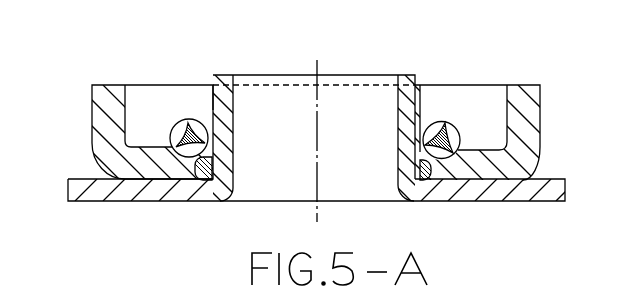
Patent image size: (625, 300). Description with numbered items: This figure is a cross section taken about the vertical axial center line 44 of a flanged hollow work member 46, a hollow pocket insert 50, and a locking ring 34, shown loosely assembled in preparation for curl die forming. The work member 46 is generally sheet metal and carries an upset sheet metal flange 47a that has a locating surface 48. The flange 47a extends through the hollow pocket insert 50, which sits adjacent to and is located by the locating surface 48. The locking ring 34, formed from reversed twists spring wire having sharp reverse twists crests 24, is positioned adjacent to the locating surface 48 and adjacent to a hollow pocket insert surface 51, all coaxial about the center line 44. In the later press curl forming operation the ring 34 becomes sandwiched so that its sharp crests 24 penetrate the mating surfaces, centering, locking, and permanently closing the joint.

The hollow pocket insert 50 is at (97, 118).
The reverse twists crests 24 is at (173, 138).
The locking ring 34 is at (185, 118).
The locating surface 48 is at (215, 92).
The upset sheet metal flange 47a is at (233, 105).
The flanged hollow work member 46 is at (88, 182).
The hollow pocket insert surface 51 is at (194, 171).
The axial center line 44 is at (317, 170).